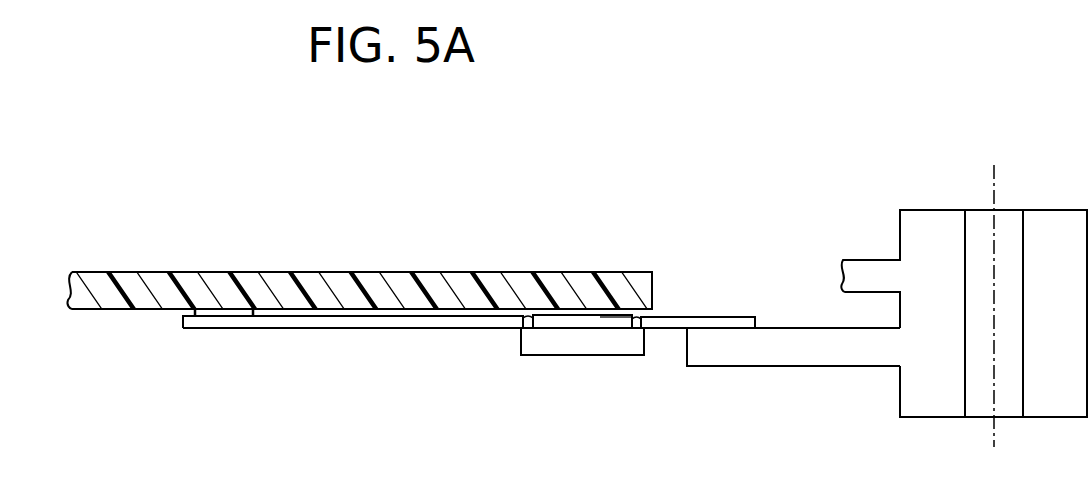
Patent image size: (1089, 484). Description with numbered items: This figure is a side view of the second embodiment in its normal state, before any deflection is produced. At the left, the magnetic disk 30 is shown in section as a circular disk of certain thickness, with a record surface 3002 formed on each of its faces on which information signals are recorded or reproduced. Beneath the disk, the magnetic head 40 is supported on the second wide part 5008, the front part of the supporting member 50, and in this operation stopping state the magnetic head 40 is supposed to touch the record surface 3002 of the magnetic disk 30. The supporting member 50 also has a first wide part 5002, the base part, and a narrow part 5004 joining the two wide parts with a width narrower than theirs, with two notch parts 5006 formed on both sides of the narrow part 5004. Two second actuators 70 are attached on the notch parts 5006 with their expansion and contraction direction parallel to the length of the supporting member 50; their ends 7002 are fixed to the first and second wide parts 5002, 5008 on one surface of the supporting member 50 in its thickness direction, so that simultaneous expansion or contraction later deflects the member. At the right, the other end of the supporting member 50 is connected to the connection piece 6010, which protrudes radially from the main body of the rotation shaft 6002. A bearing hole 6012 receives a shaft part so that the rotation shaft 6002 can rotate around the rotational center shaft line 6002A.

The magnetic disk 30 is at (306, 258).
The record surface 3002 is at (160, 314).
The magnetic head 40 is at (222, 318).
The supporting member 50 is at (432, 350).
The first wide part 5002 is at (747, 317).
The narrow part 5004 is at (583, 315).
The notch part 5006 is at (627, 320).
The second wide part 5008 is at (333, 329).
The second actuator 70 is at (596, 357).
The end of second actuator 7002 is at (523, 316).
The rotation shaft 6002 is at (928, 190).
The rotational center shaft line 6002A is at (998, 172).
The connection piece 6010 is at (795, 367).
The bearing hole 6012 is at (1020, 222).